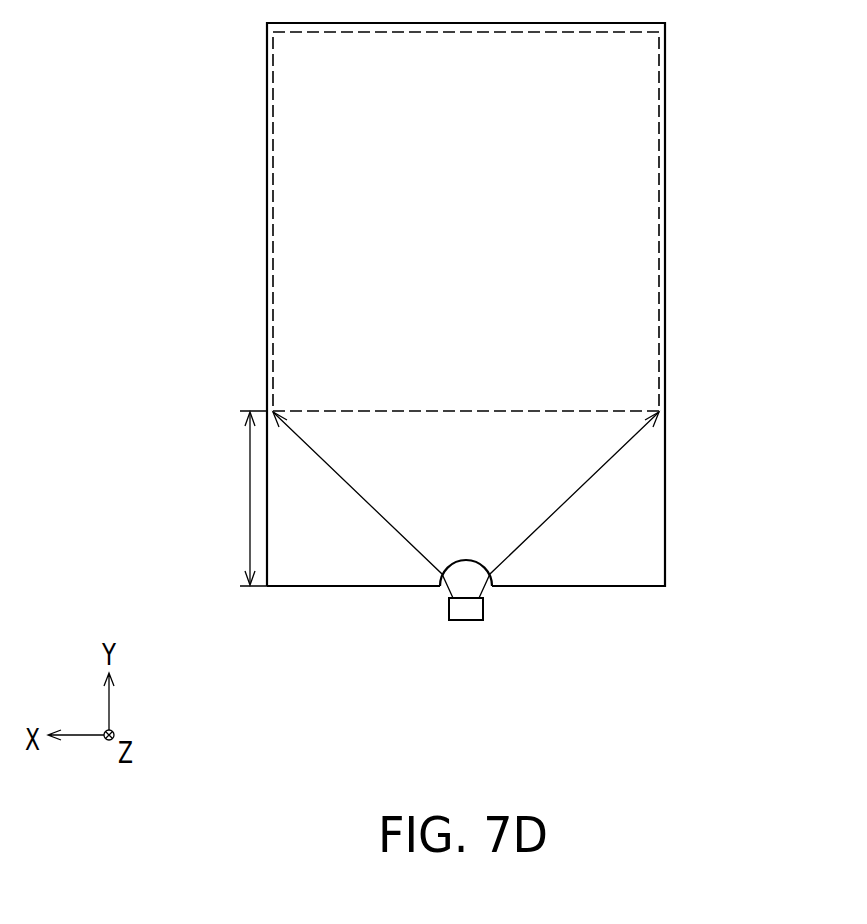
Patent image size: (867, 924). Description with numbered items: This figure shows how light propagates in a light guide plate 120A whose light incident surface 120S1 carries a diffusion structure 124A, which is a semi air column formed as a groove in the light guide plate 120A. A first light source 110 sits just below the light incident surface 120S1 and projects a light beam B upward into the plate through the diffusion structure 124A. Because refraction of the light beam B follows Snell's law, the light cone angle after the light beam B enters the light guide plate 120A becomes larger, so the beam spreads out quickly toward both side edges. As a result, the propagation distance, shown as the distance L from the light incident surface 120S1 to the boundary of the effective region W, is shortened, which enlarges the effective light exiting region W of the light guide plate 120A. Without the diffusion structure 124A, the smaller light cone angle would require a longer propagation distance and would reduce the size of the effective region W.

The light guide plate 120A is at (665, 523).
The light incident surface 120S1 is at (308, 588).
The effective region W is at (660, 148).
The light beam B is at (600, 470).
The diffusion structure 124A is at (448, 573).
The first light source 110 is at (470, 621).
The distance L is at (247, 498).